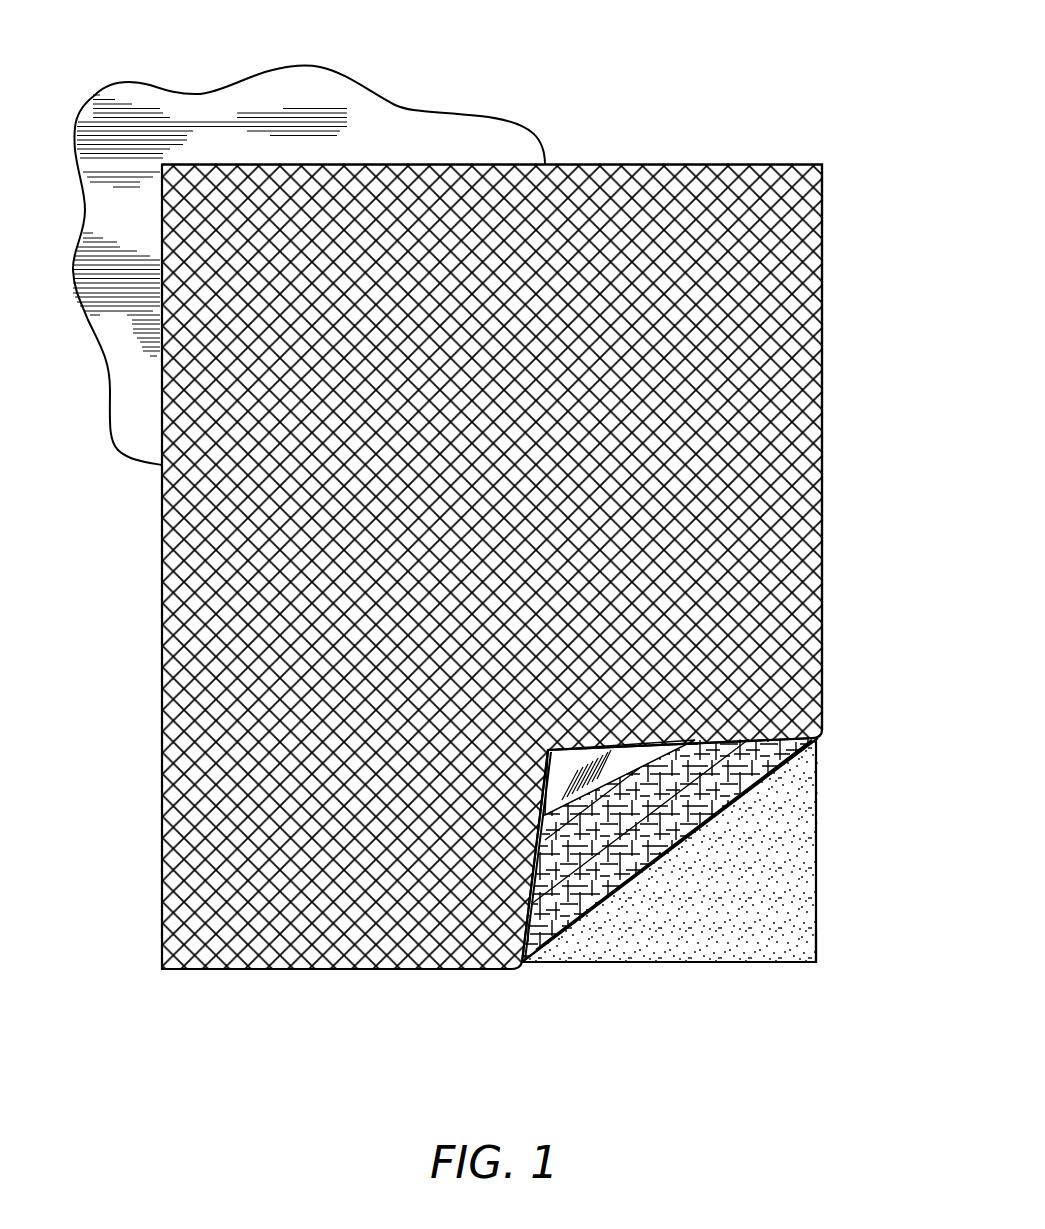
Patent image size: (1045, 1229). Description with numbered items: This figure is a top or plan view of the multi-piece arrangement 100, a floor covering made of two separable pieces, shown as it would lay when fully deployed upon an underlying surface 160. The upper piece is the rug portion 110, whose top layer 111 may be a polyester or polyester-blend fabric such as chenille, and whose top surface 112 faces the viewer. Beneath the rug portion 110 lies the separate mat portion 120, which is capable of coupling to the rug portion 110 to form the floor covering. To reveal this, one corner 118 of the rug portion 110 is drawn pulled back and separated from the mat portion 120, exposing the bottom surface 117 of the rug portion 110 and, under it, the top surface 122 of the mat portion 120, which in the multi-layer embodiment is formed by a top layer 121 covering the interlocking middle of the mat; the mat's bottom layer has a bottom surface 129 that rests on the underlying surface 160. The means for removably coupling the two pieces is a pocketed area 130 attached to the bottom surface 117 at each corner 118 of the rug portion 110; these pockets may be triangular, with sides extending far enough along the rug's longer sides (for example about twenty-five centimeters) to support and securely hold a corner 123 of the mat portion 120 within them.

The multi-piece arrangement 100 is at (803, 1025).
The rug portion 110 is at (163, 795).
The top layer 111 is at (253, 970).
The top surface 112 is at (221, 871).
The bottom surface 117 is at (757, 766).
The corner 118 is at (597, 757).
The mat portion 120 is at (817, 890).
The top layer 121 is at (777, 918).
The top surface 122 is at (767, 845).
The corner 123 is at (817, 968).
The bottom surface 129 is at (722, 903).
The pocketed area 130 is at (563, 778).
The underlying surface 160 is at (398, 114).